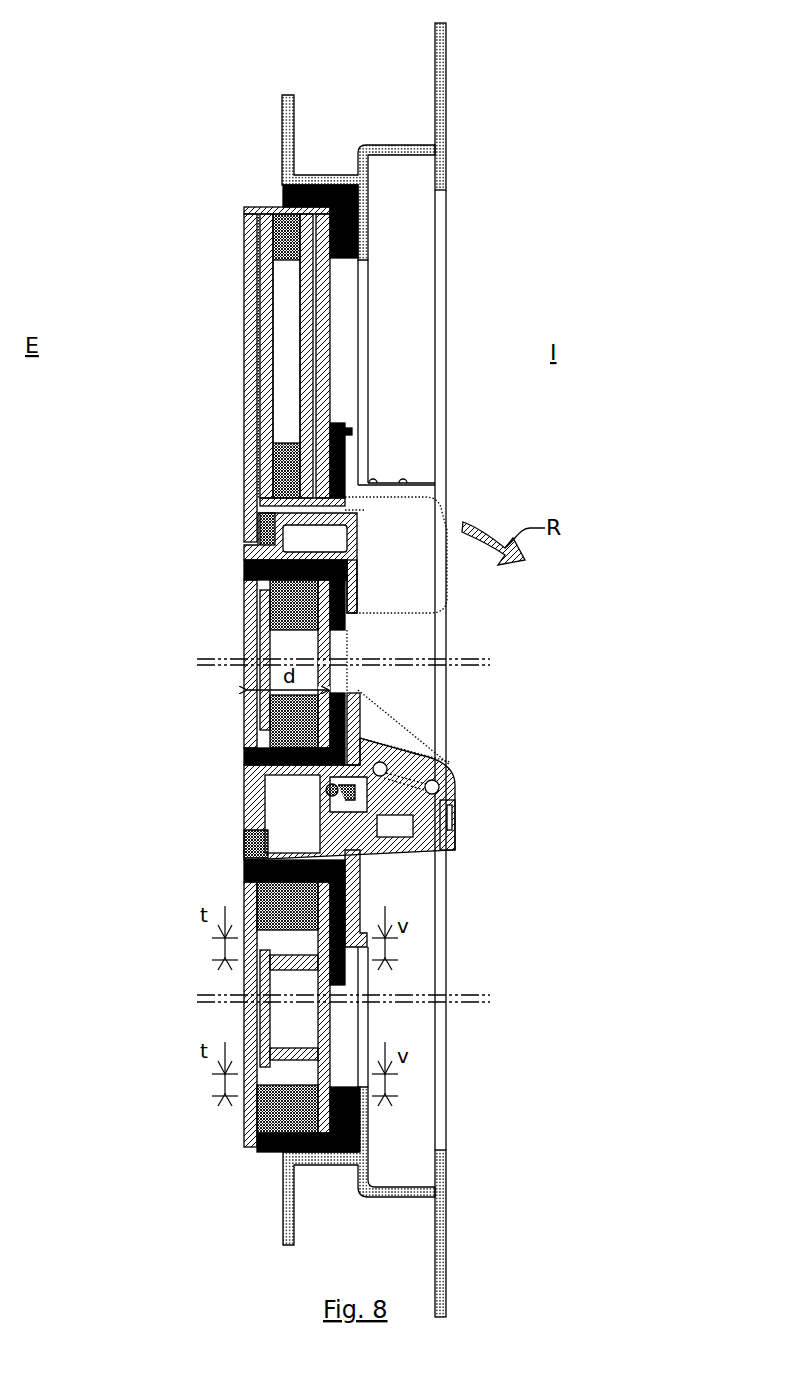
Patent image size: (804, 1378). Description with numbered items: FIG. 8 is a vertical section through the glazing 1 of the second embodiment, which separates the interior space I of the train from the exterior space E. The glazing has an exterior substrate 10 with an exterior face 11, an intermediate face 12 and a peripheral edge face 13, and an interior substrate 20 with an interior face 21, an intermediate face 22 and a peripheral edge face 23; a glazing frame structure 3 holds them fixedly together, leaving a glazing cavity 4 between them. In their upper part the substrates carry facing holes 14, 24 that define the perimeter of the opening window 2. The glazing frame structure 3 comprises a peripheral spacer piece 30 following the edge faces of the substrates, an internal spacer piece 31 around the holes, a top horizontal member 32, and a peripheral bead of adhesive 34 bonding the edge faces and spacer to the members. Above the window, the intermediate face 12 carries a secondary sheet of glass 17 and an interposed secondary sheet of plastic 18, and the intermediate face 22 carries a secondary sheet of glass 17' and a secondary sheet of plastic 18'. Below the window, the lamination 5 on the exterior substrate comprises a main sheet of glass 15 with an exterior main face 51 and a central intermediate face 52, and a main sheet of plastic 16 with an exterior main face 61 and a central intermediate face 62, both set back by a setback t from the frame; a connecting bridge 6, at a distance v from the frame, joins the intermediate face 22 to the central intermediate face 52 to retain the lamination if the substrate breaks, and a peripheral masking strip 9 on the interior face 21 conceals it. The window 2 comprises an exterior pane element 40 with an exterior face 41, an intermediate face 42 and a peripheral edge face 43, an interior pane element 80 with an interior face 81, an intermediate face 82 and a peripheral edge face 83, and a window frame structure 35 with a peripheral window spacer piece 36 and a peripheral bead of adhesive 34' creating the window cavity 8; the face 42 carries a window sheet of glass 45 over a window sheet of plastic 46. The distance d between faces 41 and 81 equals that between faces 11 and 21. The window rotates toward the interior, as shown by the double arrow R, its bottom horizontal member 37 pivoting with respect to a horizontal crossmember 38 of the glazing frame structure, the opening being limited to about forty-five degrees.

The glazing 1 is at (212, 68).
The window 2 is at (163, 600).
The glazing frame structure 3 is at (335, 92).
The glazing cavity 4 is at (277, 330).
The lamination 5 is at (285, 997).
The connecting bridge 6 is at (330, 965).
The window cavity 8 is at (263, 681).
The peripheral masking strip 9 is at (335, 1065).
The exterior substrate 10 is at (206, 357).
The exterior face 11 is at (206, 372).
The intermediate face 12 is at (262, 283).
The peripheral edge face 13 is at (248, 207).
The hole 14 is at (250, 548).
The main sheet of glass 15 is at (190, 1008).
The main sheet of plastic 16 is at (190, 1002).
The secondary sheet of glass 17 is at (218, 378).
The secondary sheet of glass 17' is at (353, 356).
The secondary sheet of plastic 18 is at (224, 356).
The secondary sheet of plastic 18' is at (361, 356).
The interior substrate 20 is at (347, 915).
The interior face 21 is at (402, 1007).
The intermediate face 22 is at (335, 987).
The peripheral edge face 23 is at (358, 232).
The hole 24 is at (330, 505).
The peripheral spacer piece 30 is at (285, 187).
The internal spacer piece 31 is at (265, 890).
The top horizontal member 32 is at (375, 145).
The peripheral bead of adhesive 34 is at (359, 1166).
The peripheral bead of adhesive 34' is at (247, 769).
The window frame structure 35 is at (360, 530).
The peripheral window spacer piece 36 is at (385, 600).
The bottom horizontal member 37 is at (375, 755).
The horizontal crossmember 38 is at (450, 838).
The exterior pane element 40 is at (211, 660).
The exterior face 41 is at (211, 664).
The intermediate face 42 is at (262, 707).
The peripheral edge face 43 is at (250, 730).
The window sheet of glass 45 is at (186, 660).
The window sheet of plastic 46 is at (186, 660).
The exterior main face 51 is at (223, 1007).
The central intermediate face 52 is at (270, 1052).
The exterior main face 61 is at (190, 1008).
The central intermediate face 62 is at (262, 1000).
The interior pane element 80 is at (370, 664).
The interior face 81 is at (335, 683).
The intermediate face 82 is at (347, 745).
The peripheral edge face 83 is at (352, 575).